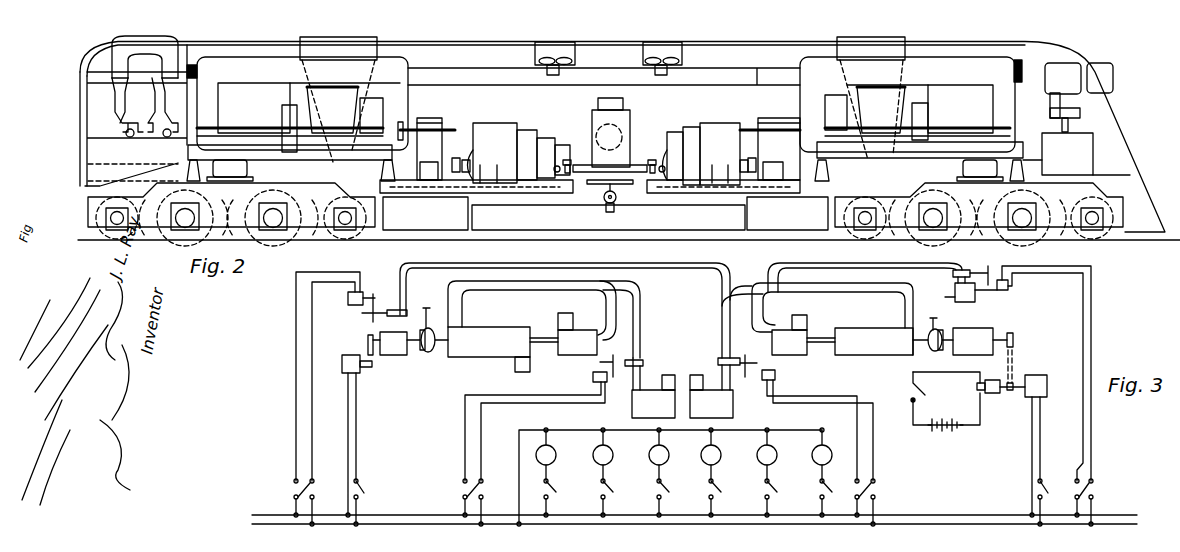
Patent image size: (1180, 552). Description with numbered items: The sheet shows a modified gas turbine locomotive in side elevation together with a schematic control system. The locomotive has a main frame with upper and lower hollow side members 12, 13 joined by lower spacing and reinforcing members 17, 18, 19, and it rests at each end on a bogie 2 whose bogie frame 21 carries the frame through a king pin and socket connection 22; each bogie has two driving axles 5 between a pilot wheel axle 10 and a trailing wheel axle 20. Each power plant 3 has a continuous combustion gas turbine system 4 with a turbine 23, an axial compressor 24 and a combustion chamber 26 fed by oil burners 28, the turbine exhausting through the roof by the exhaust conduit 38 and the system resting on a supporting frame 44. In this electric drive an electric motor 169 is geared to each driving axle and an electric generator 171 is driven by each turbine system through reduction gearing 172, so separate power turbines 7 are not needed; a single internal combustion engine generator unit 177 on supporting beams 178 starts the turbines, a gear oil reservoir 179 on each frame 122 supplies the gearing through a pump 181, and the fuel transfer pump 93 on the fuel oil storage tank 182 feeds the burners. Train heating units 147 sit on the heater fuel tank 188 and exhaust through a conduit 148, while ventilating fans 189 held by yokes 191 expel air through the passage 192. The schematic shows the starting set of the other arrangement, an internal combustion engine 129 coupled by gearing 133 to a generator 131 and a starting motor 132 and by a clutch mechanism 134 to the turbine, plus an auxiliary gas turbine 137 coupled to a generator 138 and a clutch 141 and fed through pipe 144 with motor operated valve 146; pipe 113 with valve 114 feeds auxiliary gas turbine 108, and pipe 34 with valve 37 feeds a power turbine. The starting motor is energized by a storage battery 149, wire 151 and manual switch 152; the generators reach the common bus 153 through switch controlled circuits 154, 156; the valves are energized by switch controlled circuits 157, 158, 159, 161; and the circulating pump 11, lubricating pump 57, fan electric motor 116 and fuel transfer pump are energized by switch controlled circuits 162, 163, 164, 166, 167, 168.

In FIG. 2, the bogie 2 is at (231, 228).
In FIG. 2, the power plant 3 is at (408, 145).
In FIG. 2, the continuous combustion gas turbine system 4 is at (283, 102).
In FIG. 3, the continuous combustion gas turbine system 4 is at (546, 321).
In FIG. 2, the driving axle 5 is at (186, 228).
In FIG. 3, the power turbine 7 is at (682, 388).
In FIG. 2, the pilot wheel axle 10 is at (346, 230).
In FIG. 3, the circulating pump 11 is at (669, 478).
In FIG. 2, the upper side member 12 is at (87, 82).
In FIG. 2, the lower side member 13 is at (88, 171).
In FIG. 2, the lower spacing and reinforcing member 17 is at (188, 168).
In FIG. 2, the lower spacing and reinforcing member 18 is at (383, 170).
In FIG. 2, the lower spacing and reinforcing member 19 is at (562, 160).
In FIG. 2, the trailing wheel axle 20 is at (115, 225).
In FIG. 2, the bogie frame 21 is at (88, 201).
In FIG. 2, the king pin and socket connection 22 is at (605, 170).
In FIG. 2, the turbine 23 is at (847, 102).
In FIG. 3, the turbine 23 is at (578, 355).
In FIG. 2, the axial compressor 24 is at (238, 110).
In FIG. 3, the axial compressor 24 is at (494, 331).
In FIG. 2, the combustion chamber 26 is at (288, 72).
In FIG. 3, the combustion chamber 26 is at (680, 317).
In FIG. 2, the oil burner 28 is at (192, 65).
In FIG. 3, the pipe 34 is at (641, 325).
In FIG. 3, the motor operated valve 37 is at (643, 362).
In FIG. 2, the exhaust conduit 38 is at (342, 37).
In FIG. 2, the supporting frame 44 is at (605, 151).
In FIG. 3, the pump 57 is at (656, 455).
In FIG. 2, the fuel transfer pump 93 is at (616, 198).
In FIG. 3, the fuel transfer pump 93 is at (822, 455).
In FIG. 3, the auxiliary gas turbine 108 is at (975, 298).
In FIG. 3, the pipe 113 is at (910, 263).
In FIG. 3, the motor operated valve 114 is at (972, 270).
In FIG. 3, the electric motor 116 is at (659, 455).
In FIG. 2, the frame 122 is at (590, 187).
In FIG. 3, the internal combustion engine 129 is at (992, 324).
In FIG. 3, the generator 131 is at (1038, 375).
In FIG. 3, the starting motor 132 is at (992, 393).
In FIG. 3, the gearing 133 is at (1013, 358).
In FIG. 3, the clutch mechanism 134 is at (933, 350).
In FIG. 3, the auxiliary gas turbine 137 is at (392, 355).
In FIG. 3, the generator 138 is at (348, 355).
In FIG. 3, the clutch 141 is at (432, 352).
In FIG. 3, the pipe 144 is at (650, 263).
In FIG. 3, the motor operated valve 146 is at (404, 310).
In FIG. 2, the train heating unit 147 is at (120, 111).
In FIG. 2, the conduit 148 is at (148, 38).
In FIG. 3, the storage battery 149 is at (938, 432).
In FIG. 3, the wire 151 is at (975, 375).
In FIG. 3, the manual switch 152 is at (913, 392).
In FIG. 3, the common bus 153 is at (955, 515).
In FIG. 3, the switch controlled circuit 154 is at (1032, 458).
In FIG. 3, the switch controlled circuit 156 is at (356, 438).
In FIG. 3, the switch controlled circuit 157 is at (862, 456).
In FIG. 3, the switch controlled circuit 158 is at (465, 460).
In FIG. 3, the switch controlled circuit 159 is at (1091, 298).
In FIG. 3, the switch controlled circuit 161 is at (296, 299).
In FIG. 3, the switch controlled circuit 162 is at (551, 461).
In FIG. 3, the switch controlled circuit 163 is at (603, 440).
In FIG. 3, the switch controlled circuit 164 is at (663, 462).
In FIG. 3, the switch controlled circuit 166 is at (711, 440).
In FIG. 3, the switch controlled circuit 167 is at (771, 462).
In FIG. 3, the switch controlled circuit 168 is at (822, 432).
In FIG. 2, the electric motor 169 is at (155, 232).
In FIG. 2, the electric generator 171 is at (515, 123).
In FIG. 2, the reduction gearing 172 is at (437, 118).
In FIG. 2, the internal combustion engine generator unit 177 is at (585, 115).
In FIG. 2, the supporting beam 178 is at (582, 172).
In FIG. 2, the gear oil reservoir 179 is at (427, 230).
In FIG. 2, the pump 181 is at (605, 213).
In FIG. 2, the fuel oil storage tank 182 is at (577, 230).
In FIG. 2, the heater fuel tank 188 is at (135, 157).
In FIG. 2, the ventilating fan 189 is at (559, 70).
In FIG. 2, the bracket or yoke 191 is at (535, 57).
In FIG. 2, the passage 192 is at (565, 42).